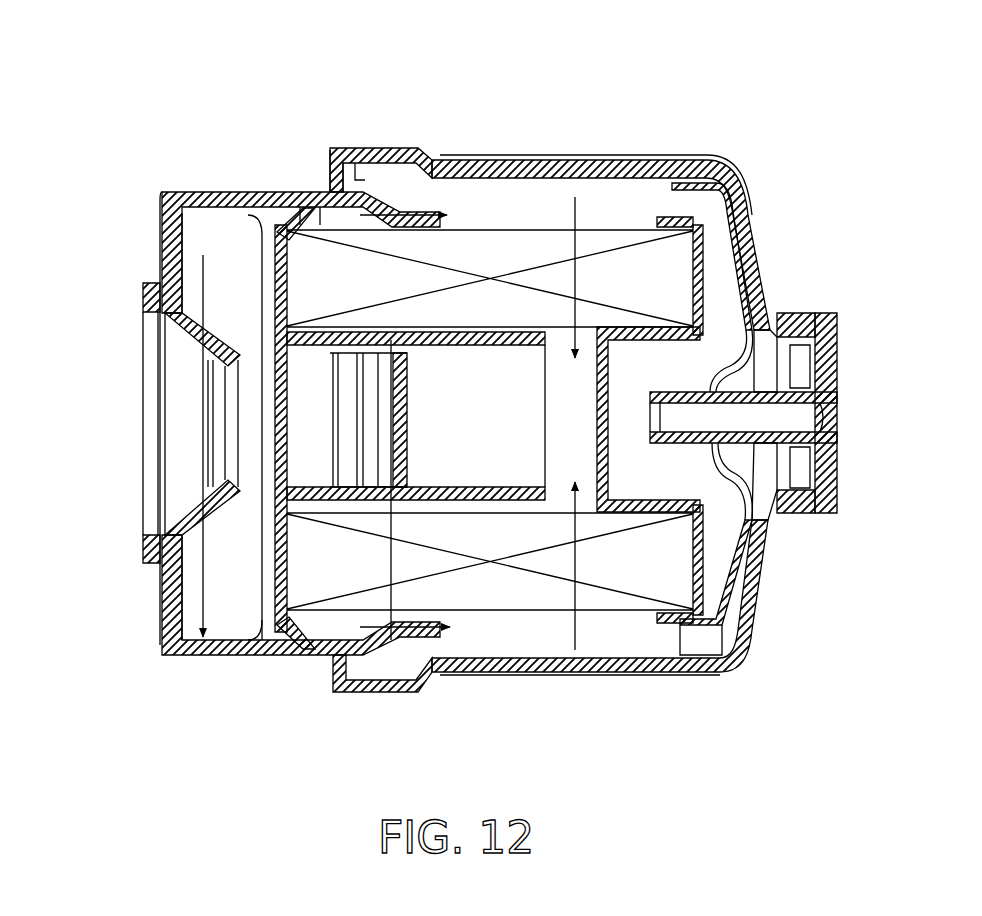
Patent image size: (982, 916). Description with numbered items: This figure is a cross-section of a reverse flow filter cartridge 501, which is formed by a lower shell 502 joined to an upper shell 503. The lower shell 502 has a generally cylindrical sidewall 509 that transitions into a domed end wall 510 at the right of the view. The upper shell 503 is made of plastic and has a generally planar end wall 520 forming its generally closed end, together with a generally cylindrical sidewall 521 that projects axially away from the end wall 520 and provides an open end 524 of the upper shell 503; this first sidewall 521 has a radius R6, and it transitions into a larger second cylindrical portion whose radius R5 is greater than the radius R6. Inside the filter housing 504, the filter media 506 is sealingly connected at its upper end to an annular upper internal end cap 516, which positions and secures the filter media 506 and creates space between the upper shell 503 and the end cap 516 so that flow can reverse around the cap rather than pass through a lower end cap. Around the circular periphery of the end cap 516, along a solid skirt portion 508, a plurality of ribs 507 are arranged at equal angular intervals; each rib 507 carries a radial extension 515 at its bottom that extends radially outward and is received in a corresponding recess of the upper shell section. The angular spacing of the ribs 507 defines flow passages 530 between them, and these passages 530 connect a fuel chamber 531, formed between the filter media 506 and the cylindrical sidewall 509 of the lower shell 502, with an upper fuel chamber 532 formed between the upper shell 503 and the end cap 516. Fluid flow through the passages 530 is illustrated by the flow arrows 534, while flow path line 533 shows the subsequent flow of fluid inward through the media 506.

The filter cartridge 501 is at (140, 70).
The lower shell 502 is at (735, 660).
The upper shell 503 is at (192, 660).
The filter housing 504 is at (298, 100).
The filter media 506 is at (557, 203).
The ribs 507 is at (322, 192).
The solid skirt portion 508 is at (292, 228).
The cylindrical sidewall 509 is at (575, 668).
The domed end wall 510 is at (757, 592).
The radial extensions 515 is at (416, 195).
The upper internal end cap 516 is at (187, 208).
The end wall 520 is at (178, 612).
The cylindrical sidewall 521 is at (272, 652).
The open end 524 is at (400, 597).
The flow passages 530 is at (318, 652).
The fuel chamber 531 is at (599, 208).
The upper fuel chamber 532 is at (222, 278).
The flow path line 533 is at (577, 281).
The fluid flow arrows 534 is at (238, 262).
The radius of second cylindrical sidewall R5 is at (410, 490).
The radius of first sidewall R6 is at (222, 446).